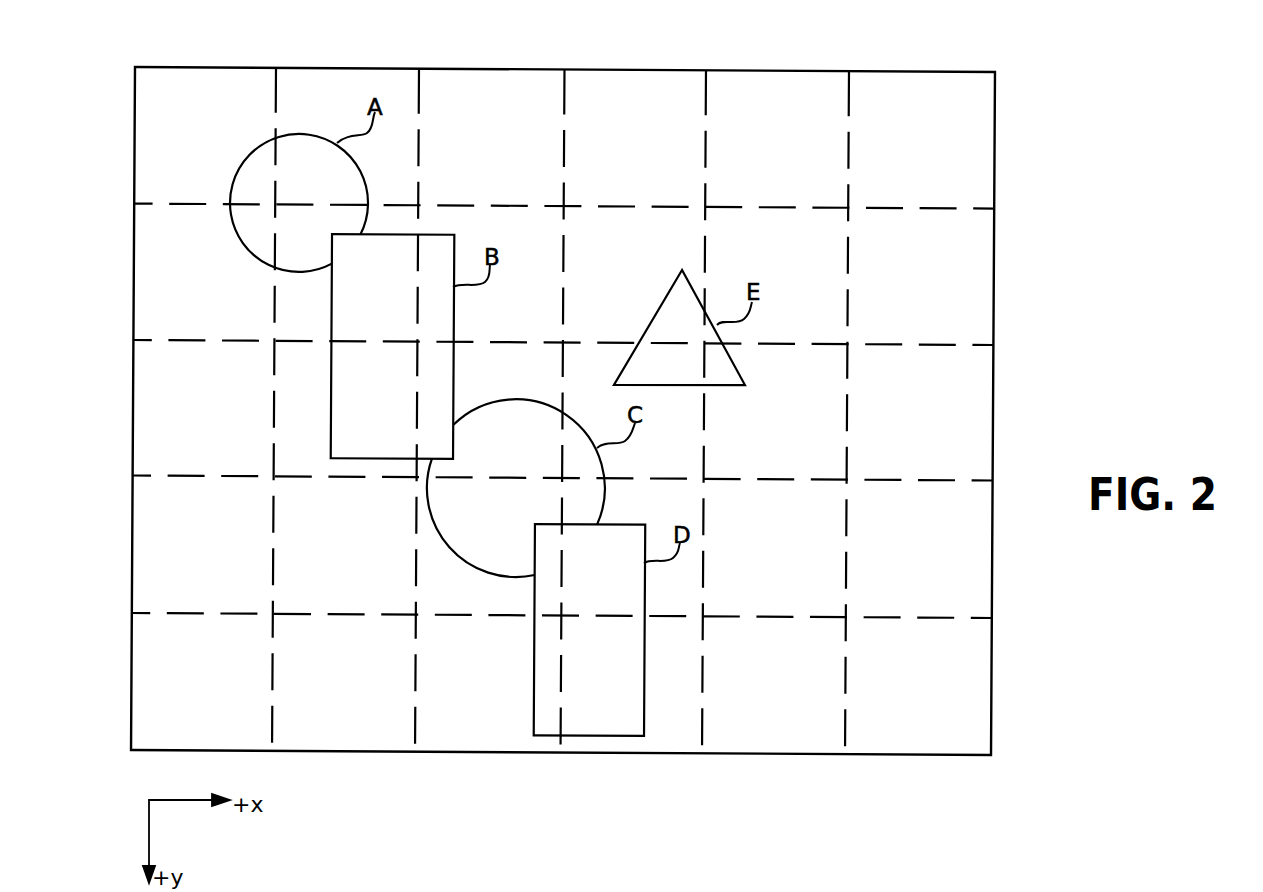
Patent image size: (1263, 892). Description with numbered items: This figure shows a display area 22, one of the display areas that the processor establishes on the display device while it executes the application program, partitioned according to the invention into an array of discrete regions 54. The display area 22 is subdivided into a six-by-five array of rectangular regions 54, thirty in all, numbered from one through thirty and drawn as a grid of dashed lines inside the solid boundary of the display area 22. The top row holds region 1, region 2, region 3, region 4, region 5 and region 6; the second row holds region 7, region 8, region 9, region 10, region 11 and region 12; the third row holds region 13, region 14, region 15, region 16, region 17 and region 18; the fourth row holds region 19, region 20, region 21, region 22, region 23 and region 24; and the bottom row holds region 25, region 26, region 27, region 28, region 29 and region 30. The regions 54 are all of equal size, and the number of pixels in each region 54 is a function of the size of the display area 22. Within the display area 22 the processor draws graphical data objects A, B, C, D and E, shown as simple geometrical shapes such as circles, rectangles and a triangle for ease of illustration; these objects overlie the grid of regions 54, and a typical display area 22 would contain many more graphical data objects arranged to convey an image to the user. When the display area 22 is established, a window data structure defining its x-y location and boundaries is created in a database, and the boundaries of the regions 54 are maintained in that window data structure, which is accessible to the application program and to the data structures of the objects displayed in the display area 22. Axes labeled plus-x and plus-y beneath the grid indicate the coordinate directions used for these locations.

The display area 22 is at (488, 67).
The discrete region 54 is at (234, 78).
The rectangular region 1 is at (155, 84).
The rectangular region 2 is at (296, 84).
The rectangular region 3 is at (439, 85).
The rectangular region 4 is at (584, 86).
The rectangular region 5 is at (726, 87).
The rectangular region 6 is at (869, 88).
The rectangular region 7 is at (154, 220).
The rectangular region 8 is at (295, 221).
The rectangular region 9 is at (438, 222).
The rectangular region 10 is at (591, 223).
The rectangular region 11 is at (732, 223).
The rectangular region 12 is at (875, 224).
The rectangular region 13 is at (160, 357).
The rectangular region 14 is at (301, 357).
The rectangular region 15 is at (444, 358).
The rectangular region 16 is at (590, 359).
The rectangular region 17 is at (731, 360).
The rectangular region 18 is at (874, 361).
The rectangular region 19 is at (159, 492).
The rectangular region 20 is at (300, 493).
The rectangular region 21 is at (443, 494).
The rectangular region 23 is at (730, 495).
The rectangular region 24 is at (873, 496).
The rectangular region 25 is at (159, 630).
The rectangular region 26 is at (300, 630).
The rectangular region 27 is at (443, 631).
The rectangular region 28 is at (588, 632).
The rectangular region 29 is at (730, 633).
The rectangular region 30 is at (873, 634).